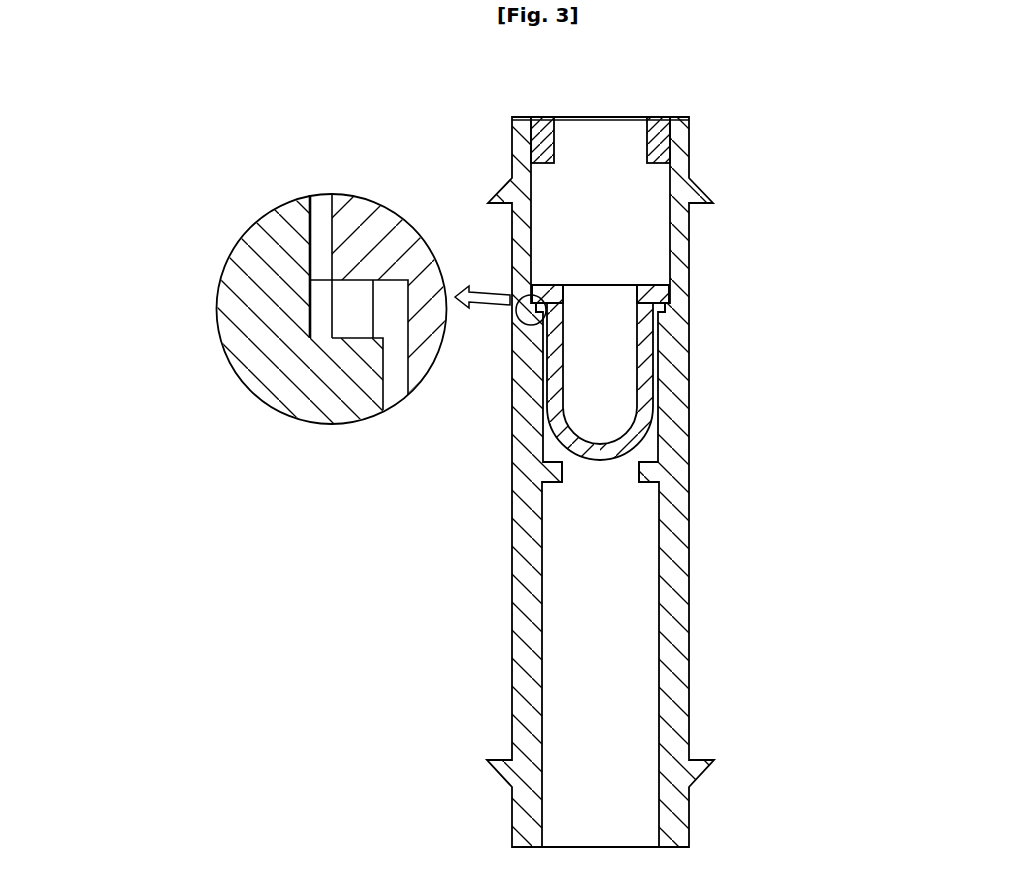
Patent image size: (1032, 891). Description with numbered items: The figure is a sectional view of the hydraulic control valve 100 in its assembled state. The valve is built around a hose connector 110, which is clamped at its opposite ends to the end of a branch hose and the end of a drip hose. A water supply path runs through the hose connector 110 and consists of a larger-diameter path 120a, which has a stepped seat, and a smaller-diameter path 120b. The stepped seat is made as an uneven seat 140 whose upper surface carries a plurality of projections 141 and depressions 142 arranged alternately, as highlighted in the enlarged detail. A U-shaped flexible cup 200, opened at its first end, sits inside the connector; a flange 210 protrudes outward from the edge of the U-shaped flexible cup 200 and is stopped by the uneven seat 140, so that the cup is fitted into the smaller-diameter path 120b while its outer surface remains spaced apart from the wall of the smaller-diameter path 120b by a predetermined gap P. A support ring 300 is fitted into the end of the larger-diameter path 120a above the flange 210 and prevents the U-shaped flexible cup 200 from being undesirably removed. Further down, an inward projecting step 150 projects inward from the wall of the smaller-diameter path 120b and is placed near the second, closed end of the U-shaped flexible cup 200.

The hydraulic control valve 100 is at (418, 677).
The hose connector 110 is at (262, 279).
The larger-diameter path 120a is at (608, 218).
The smaller-diameter path 120b is at (606, 647).
The uneven seat 140 is at (370, 342).
The projections 141 is at (322, 293).
The depressions 142 is at (352, 315).
The inward projecting step 150 is at (647, 470).
The U-shaped flexible cup 200 is at (646, 375).
The flange 210 is at (663, 293).
The support ring 300 is at (663, 137).
The gap P is at (542, 386).